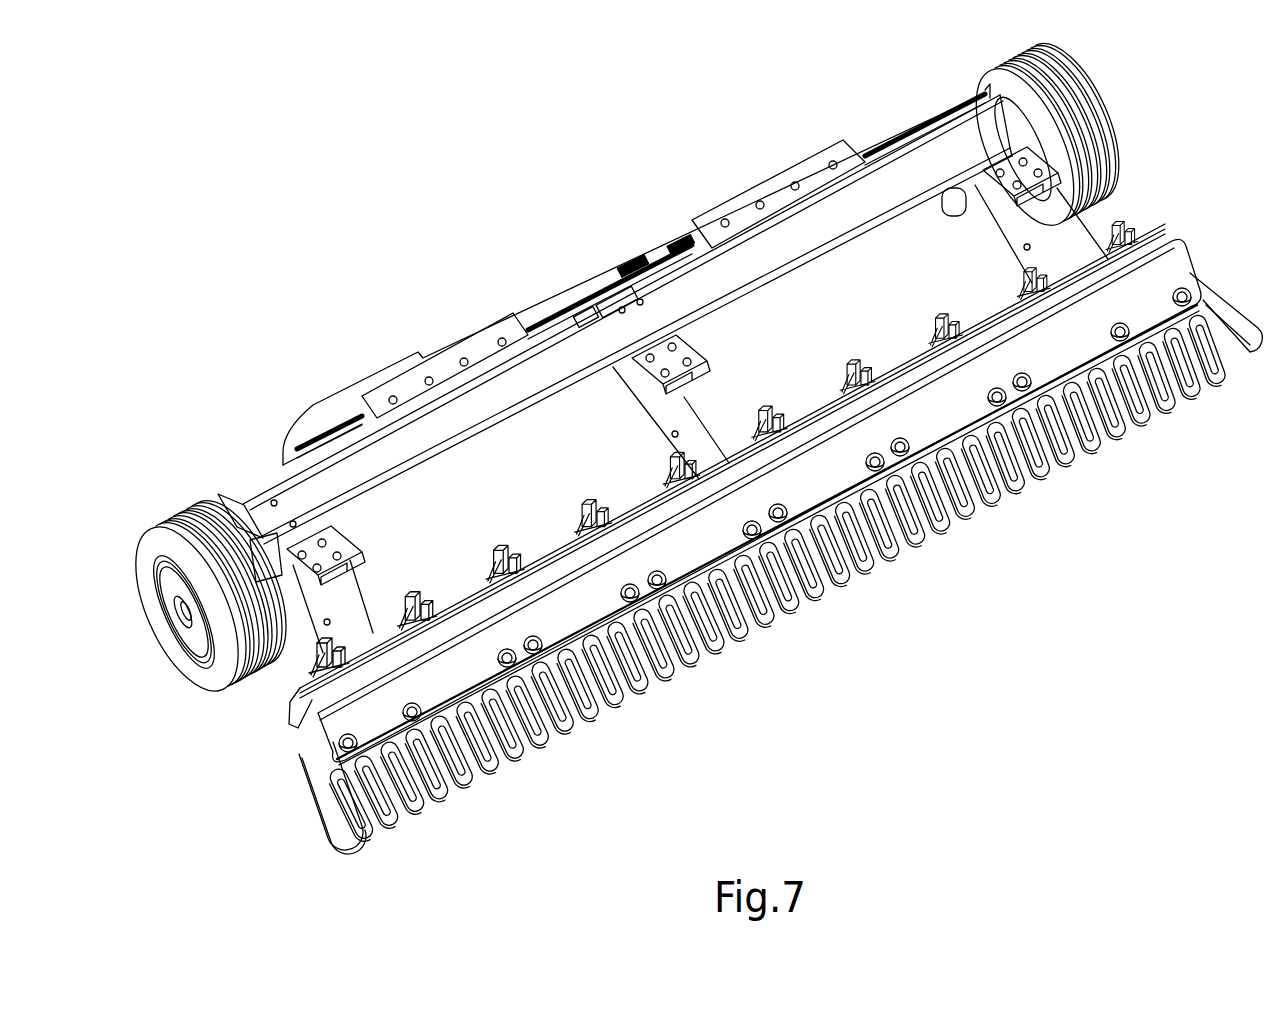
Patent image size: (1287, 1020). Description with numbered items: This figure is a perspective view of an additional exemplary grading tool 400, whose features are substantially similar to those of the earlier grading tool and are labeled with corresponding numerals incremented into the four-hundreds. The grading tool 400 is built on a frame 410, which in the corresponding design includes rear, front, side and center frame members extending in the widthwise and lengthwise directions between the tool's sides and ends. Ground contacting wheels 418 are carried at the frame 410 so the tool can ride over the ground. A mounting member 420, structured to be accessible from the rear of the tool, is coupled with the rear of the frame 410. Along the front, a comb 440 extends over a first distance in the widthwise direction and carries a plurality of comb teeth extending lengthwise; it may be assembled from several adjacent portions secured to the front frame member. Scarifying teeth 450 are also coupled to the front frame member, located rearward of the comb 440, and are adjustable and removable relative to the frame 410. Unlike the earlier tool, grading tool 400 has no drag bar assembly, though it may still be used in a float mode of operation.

The grading tool 400 is at (689, 440).
The frame 410 is at (240, 476).
The ground contacting wheels 418 is at (1094, 90).
The mounting member 420 is at (588, 296).
The comb 440 is at (1213, 270).
The scarifying teeth 450 is at (505, 548).